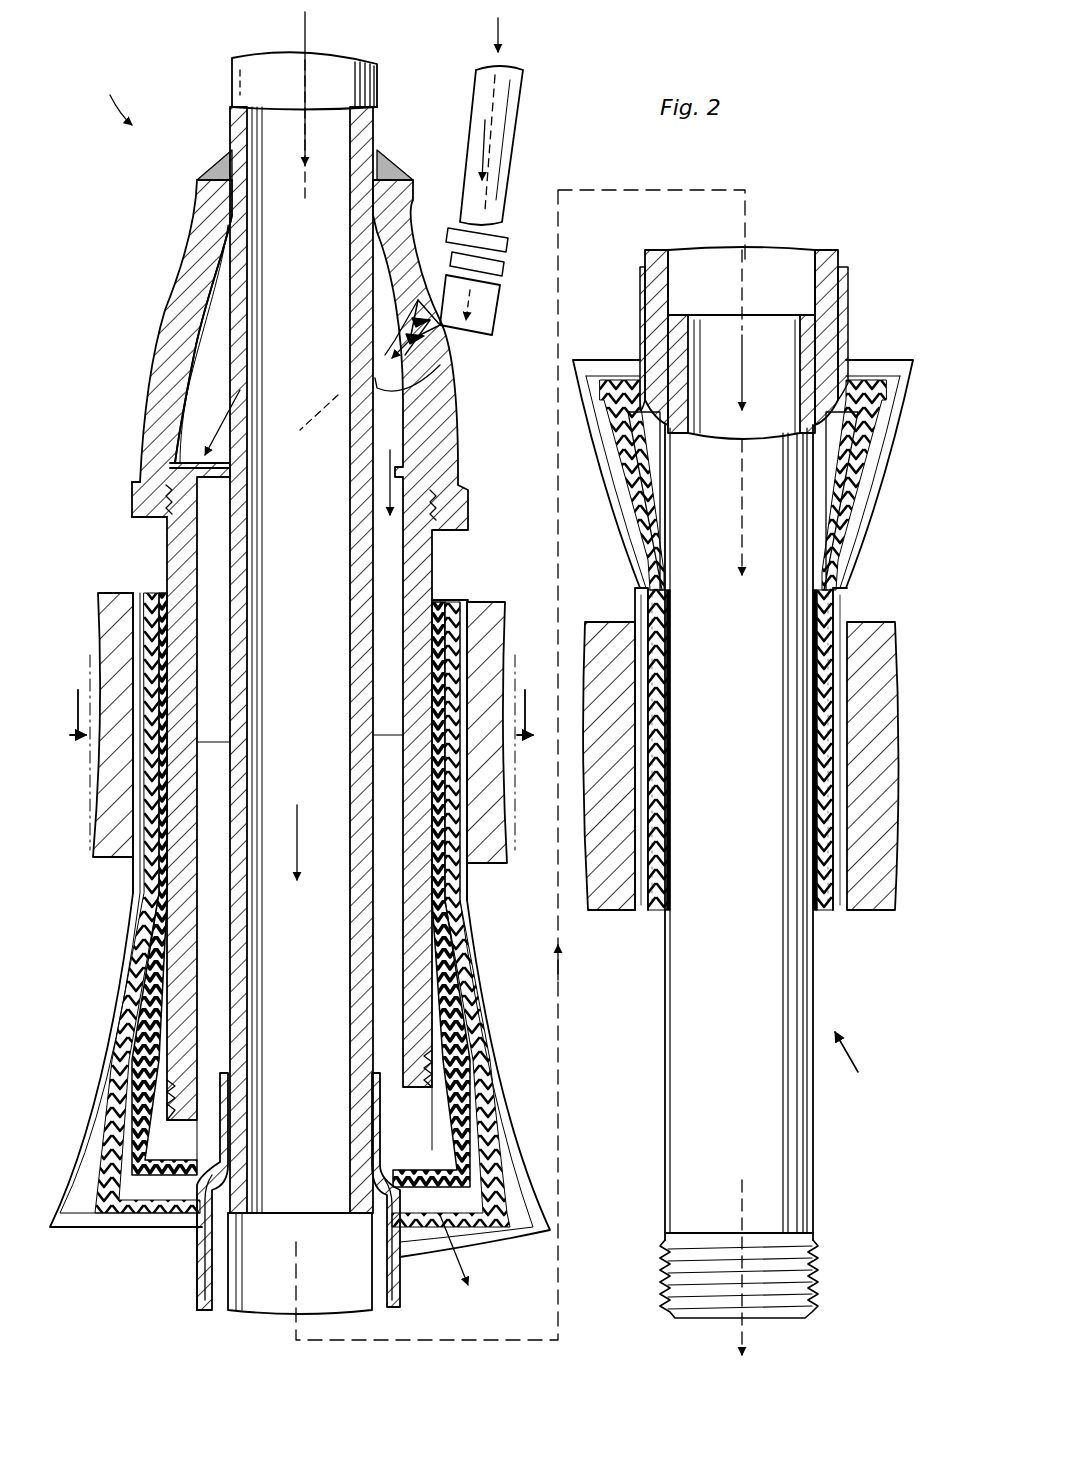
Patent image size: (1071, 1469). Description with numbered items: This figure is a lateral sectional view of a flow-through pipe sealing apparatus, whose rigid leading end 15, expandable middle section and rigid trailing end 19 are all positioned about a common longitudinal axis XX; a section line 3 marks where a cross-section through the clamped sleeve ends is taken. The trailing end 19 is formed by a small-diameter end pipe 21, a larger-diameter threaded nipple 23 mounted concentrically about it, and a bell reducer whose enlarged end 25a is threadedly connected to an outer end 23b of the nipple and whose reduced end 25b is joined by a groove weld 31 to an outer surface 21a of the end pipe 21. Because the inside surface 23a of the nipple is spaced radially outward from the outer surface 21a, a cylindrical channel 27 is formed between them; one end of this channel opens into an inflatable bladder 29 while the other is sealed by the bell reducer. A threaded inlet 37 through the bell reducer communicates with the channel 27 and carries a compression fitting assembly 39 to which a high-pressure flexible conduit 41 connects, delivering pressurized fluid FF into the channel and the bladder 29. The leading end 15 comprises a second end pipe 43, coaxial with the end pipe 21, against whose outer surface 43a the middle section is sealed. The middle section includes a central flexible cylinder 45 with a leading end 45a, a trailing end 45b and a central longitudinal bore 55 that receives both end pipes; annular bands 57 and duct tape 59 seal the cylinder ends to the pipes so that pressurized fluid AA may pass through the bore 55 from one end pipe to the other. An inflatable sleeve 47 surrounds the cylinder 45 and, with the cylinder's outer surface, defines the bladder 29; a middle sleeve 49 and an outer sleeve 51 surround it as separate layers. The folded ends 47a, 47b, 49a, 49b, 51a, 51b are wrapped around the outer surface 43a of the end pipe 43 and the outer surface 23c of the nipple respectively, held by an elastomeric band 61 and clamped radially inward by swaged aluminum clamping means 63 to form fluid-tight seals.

The leading end 15 is at (861, 1064).
The trailing end 19 is at (107, 98).
The end pipe 21 is at (236, 75).
The outer surface 21a is at (195, 352).
The threaded nipple 23 is at (432, 548).
The inside surface 23a is at (400, 735).
The outer end 23b is at (172, 463).
The outer surface 23c is at (447, 602).
The enlarged end 25a is at (138, 493).
The reduced end 25b is at (205, 195).
The cylindrical channel 27 is at (378, 548).
The inflatable bladder 29 is at (182, 1150).
The groove weld 31 is at (218, 162).
The threaded inlet 37 is at (435, 372).
The compression fitting assembly 39 is at (474, 322).
The flexible conduit 41 is at (505, 145).
The second end pipe 43 is at (750, 790).
The outer surface 43a is at (820, 1028).
The flexible cylinder 45 is at (205, 1262).
The leading end 45a is at (790, 325).
The trailing end 45b is at (322, 1210).
The inflatable sleeve 47 is at (442, 980).
The leading end 47a is at (815, 682).
The trailing end 47b is at (160, 623).
The middle sleeve 49 is at (457, 1030).
The leading end 49a is at (828, 737).
The trailing end 49b is at (157, 596).
The outer sleeve 51 is at (480, 1062).
The leading end 51a is at (842, 820).
The trailing end 51b is at (150, 600).
The central longitudinal bore 55 is at (345, 1263).
The annular band 57 is at (200, 1195).
The duct tape 59 is at (200, 1232).
The elastomeric band 61 is at (115, 858).
The clamping means 63 is at (112, 592).
The section line 3- 3 is at (299, 751).
The pressurized fluid AA is at (305, 30).
The pressurized fluid FF is at (500, 30).
The longitudinal axis XX is at (750, 203).